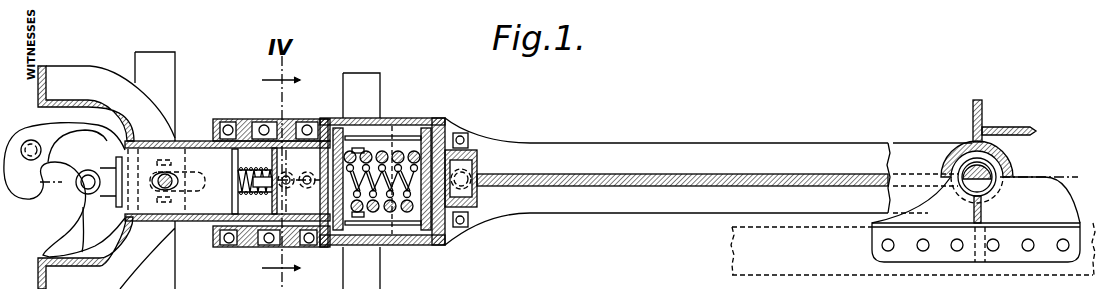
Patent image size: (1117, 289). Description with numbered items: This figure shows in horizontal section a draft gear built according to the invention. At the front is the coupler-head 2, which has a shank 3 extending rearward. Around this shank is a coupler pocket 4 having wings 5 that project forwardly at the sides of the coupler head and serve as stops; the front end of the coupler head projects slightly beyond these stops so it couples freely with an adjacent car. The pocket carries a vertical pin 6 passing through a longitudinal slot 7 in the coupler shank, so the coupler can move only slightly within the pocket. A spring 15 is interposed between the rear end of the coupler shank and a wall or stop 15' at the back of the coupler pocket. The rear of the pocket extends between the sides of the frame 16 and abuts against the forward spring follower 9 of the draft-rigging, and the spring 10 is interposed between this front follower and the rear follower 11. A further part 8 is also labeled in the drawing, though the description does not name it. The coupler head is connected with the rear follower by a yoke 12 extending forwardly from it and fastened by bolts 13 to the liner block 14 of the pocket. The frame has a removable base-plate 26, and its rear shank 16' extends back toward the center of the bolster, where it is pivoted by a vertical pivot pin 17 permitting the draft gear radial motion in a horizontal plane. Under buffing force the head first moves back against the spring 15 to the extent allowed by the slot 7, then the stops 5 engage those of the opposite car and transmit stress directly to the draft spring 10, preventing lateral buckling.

The coupler-head 2 is at (64, 190).
The shank 3 is at (227, 167).
The coupler pocket 4 is at (227, 232).
The wings 5 is at (106, 170).
The vertical pin 6 is at (180, 182).
The longitudinal slot 7 is at (153, 182).
The lower roller bearing 8 is at (257, 233).
The forward spring follower 9 is at (332, 236).
The spring 10 is at (378, 214).
The rear follower 11 is at (410, 214).
The yoke 12 is at (477, 192).
The bolts 13 is at (289, 178).
The liner block 14 is at (296, 182).
The spring 15 is at (255, 173).
The wall or stop 15' is at (257, 196).
The frame 16 is at (382, 181).
The rear shank 16' is at (708, 181).
The vertical pivot pin 17 is at (989, 170).
The removable base-plate 26 is at (401, 132).